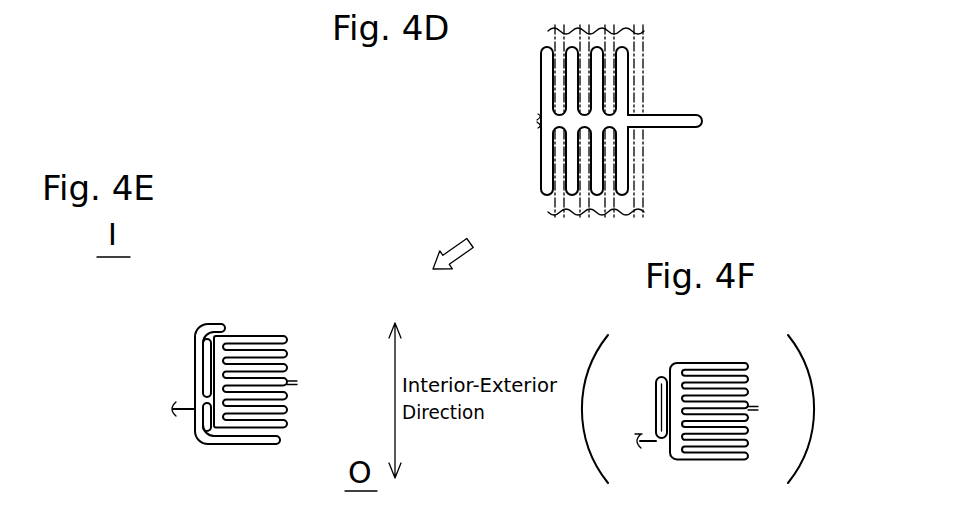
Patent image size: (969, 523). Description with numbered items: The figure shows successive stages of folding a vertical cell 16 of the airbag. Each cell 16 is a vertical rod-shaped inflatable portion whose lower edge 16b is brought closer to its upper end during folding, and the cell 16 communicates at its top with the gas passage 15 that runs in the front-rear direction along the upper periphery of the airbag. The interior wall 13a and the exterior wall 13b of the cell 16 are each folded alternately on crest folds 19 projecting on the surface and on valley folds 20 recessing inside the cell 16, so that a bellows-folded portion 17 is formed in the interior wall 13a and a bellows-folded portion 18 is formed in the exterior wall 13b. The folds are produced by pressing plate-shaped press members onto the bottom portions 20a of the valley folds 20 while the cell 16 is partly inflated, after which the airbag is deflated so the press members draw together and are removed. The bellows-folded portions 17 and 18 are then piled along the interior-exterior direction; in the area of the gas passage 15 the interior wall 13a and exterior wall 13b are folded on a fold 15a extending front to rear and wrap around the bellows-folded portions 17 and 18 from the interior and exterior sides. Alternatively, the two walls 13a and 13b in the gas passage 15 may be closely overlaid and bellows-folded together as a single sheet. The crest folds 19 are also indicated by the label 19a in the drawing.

In FIG. 4E, the interior wall 13a is at (202, 333).
In FIG. 4E, the exterior wall 13b is at (225, 447).
In FIG. 4E, the gas passage 15 is at (190, 363).
In FIG. 4F, the gas passage 15 is at (658, 380).
In FIG. 4E, the fold 15a is at (223, 332).
In FIG. 4E, the cell 16 is at (278, 316).
In FIG. 4F, the cell 16 is at (744, 339).
In FIG. 4D, the lower edge 16b is at (705, 121).
In FIG. 4D, the bellows-folded portion 17 is at (665, 75).
In FIG. 4D, the bellows-folded portion 18 is at (670, 154).
In FIG. 4D, the crest fold 19 is at (630, 200).
In FIG. 4D, the louver slit 19a is at (630, 50).
In FIG. 4D, the valley fold 20 is at (538, 128).
In FIG. 4D, the bottom portion 20a is at (538, 114).